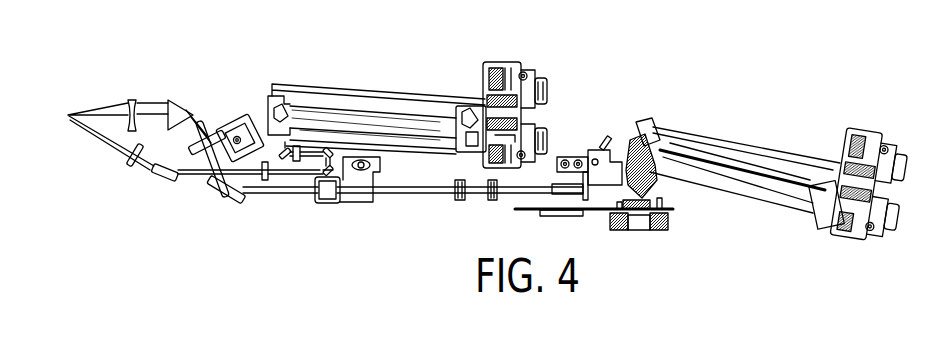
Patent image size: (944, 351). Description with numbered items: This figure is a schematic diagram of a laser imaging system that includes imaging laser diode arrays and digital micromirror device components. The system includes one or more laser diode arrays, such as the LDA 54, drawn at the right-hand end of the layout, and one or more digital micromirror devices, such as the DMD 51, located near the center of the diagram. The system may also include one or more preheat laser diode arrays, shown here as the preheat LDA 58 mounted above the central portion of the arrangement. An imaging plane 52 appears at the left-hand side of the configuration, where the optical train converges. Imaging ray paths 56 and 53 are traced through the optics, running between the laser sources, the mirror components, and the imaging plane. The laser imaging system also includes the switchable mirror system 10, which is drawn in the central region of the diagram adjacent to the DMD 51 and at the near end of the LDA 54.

The switchable mirror system 10 is at (651, 140).
The DMD 51 is at (667, 229).
The imaging plane 52 is at (97, 82).
The imaging ray path 53 is at (112, 143).
The LDA 54 is at (874, 108).
The imaging ray path 56 is at (281, 198).
The preheat LDA 58 is at (510, 66).